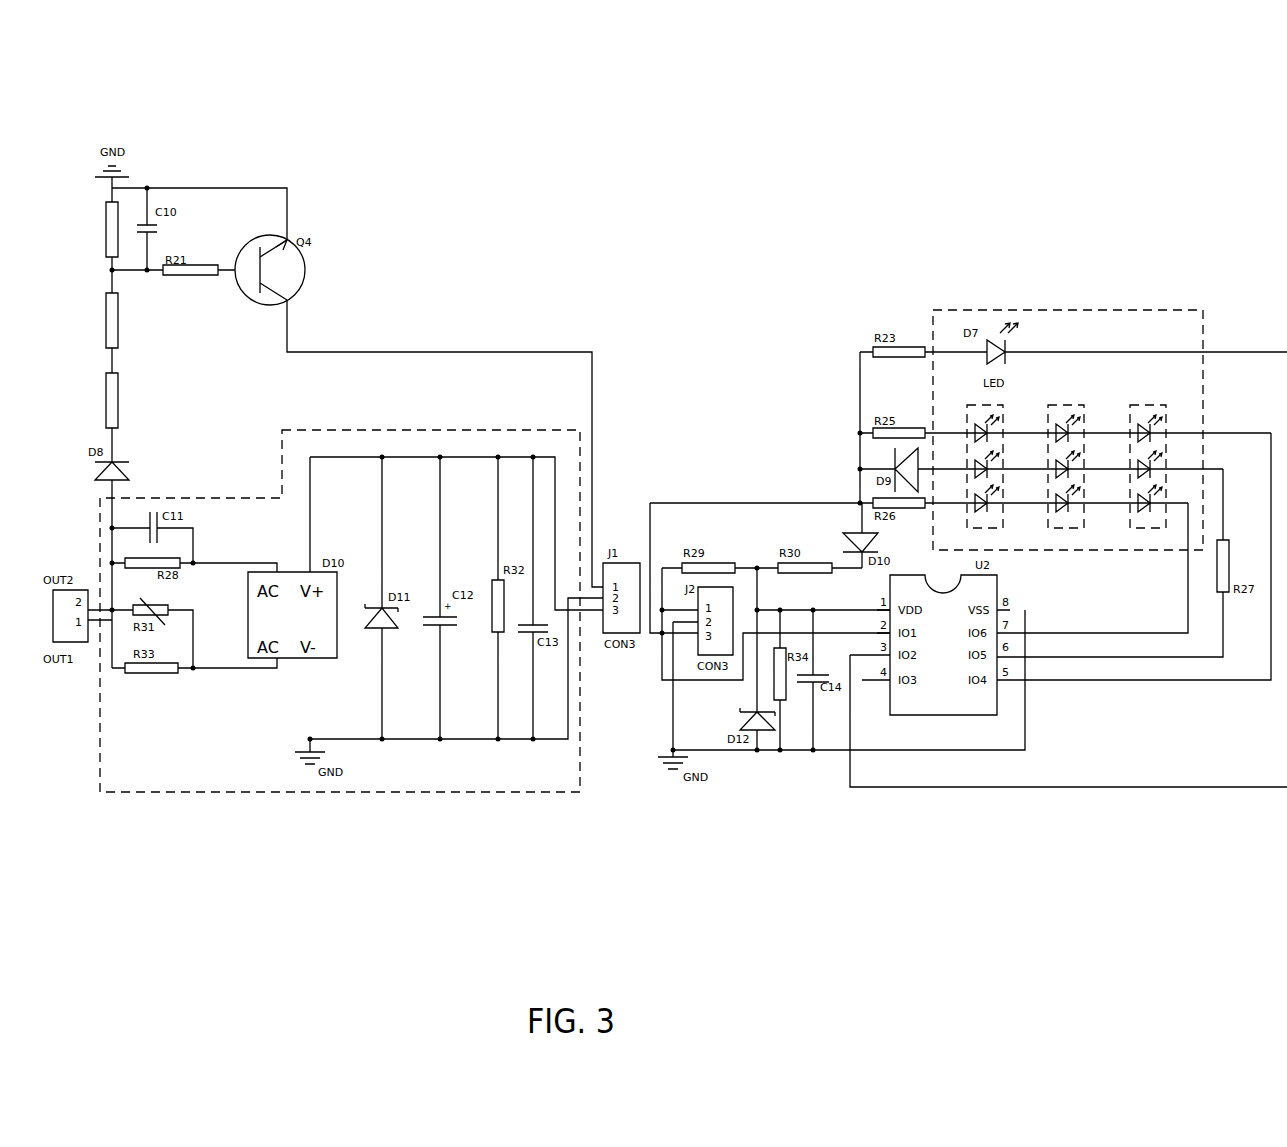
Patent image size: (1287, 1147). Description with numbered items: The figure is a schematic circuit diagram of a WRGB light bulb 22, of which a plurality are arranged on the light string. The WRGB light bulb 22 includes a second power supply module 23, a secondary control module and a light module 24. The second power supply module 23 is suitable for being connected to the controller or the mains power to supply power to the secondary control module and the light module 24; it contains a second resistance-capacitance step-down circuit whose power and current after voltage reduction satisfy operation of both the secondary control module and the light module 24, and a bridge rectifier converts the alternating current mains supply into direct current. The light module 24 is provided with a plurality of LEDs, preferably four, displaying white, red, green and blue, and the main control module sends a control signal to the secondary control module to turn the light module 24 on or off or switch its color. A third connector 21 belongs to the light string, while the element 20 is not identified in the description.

The power supply module 23 is at (230, 767).
The LED display module 24 is at (1088, 327).
The resistor R20 20 is at (98, 229).
The resistor R22 22 is at (98, 320).
The resistor R24 21 is at (98, 400).